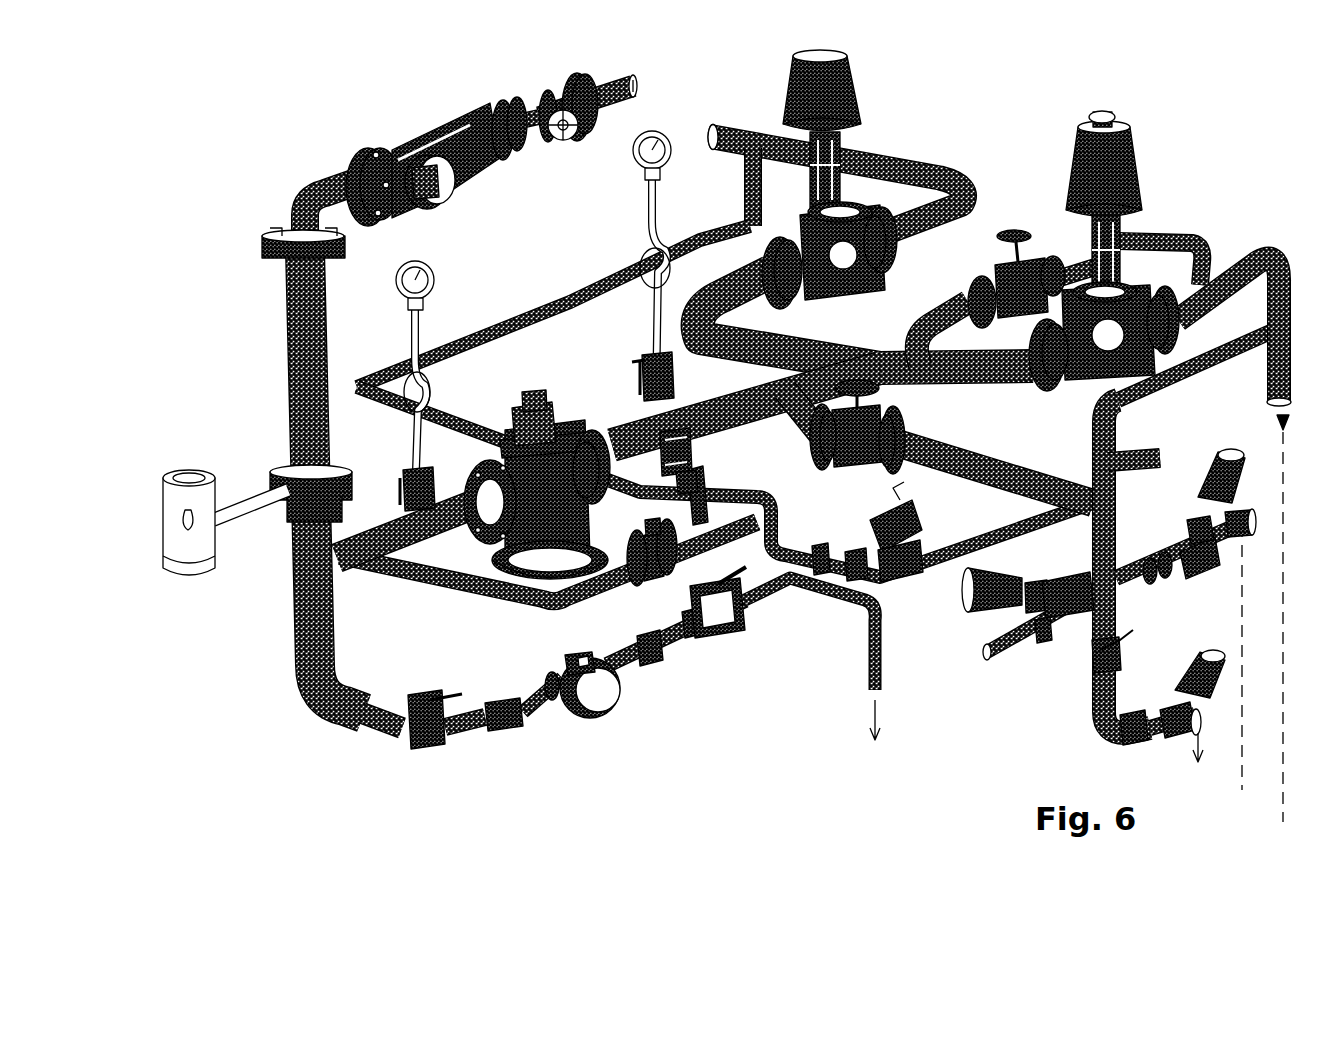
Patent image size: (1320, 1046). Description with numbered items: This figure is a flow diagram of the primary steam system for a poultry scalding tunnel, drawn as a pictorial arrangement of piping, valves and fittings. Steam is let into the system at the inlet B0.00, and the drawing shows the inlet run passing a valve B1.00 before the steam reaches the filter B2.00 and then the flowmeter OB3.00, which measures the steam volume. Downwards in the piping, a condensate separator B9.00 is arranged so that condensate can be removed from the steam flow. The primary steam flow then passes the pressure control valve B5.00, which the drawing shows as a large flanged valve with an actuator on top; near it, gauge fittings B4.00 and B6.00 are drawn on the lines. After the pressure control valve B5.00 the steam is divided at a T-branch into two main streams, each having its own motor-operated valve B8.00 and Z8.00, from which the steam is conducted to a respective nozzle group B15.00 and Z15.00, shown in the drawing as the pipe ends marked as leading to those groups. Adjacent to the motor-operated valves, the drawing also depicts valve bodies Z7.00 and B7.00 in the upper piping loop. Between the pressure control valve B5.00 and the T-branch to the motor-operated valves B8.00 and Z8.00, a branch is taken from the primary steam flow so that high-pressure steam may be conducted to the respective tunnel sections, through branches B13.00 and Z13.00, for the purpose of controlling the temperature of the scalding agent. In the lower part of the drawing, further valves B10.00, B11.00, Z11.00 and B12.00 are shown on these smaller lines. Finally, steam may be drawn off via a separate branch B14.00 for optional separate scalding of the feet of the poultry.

The steam inlet B0.00 is at (640, 87).
The inlet shutoff valve B1.00 is at (533, 112).
The filter B2.00 is at (418, 140).
The flowmeter OB3.00 is at (243, 492).
The pressure gauge B4.00 is at (436, 281).
The pressure control valve B5.00 is at (546, 396).
The pressure gauge B6.00 is at (636, 160).
The bypass valve B7.00 is at (975, 292).
The motor-operated valve B8.00 is at (1131, 152).
The three-way control valve Z7.00 is at (856, 287).
The motor-operated valve Z8.00 is at (850, 97).
The condensate separator B9.00 is at (613, 699).
The shutoff valve B10.00 is at (655, 578).
The valve B11.00 is at (876, 552).
The solenoid valve Z11.00 is at (696, 470).
The globe valve B12.00 is at (862, 463).
The branch B13.00 is at (1205, 557).
The branch Z13.00 is at (1062, 648).
The separate branch B14.00 is at (1138, 742).
The nozzle group Z15.00 is at (702, 117).
The nozzle group B15.00 is at (1244, 406).